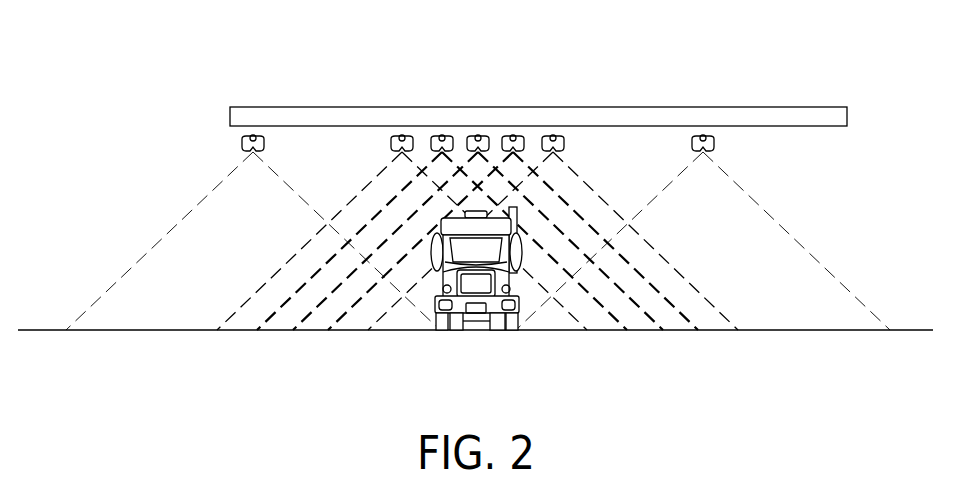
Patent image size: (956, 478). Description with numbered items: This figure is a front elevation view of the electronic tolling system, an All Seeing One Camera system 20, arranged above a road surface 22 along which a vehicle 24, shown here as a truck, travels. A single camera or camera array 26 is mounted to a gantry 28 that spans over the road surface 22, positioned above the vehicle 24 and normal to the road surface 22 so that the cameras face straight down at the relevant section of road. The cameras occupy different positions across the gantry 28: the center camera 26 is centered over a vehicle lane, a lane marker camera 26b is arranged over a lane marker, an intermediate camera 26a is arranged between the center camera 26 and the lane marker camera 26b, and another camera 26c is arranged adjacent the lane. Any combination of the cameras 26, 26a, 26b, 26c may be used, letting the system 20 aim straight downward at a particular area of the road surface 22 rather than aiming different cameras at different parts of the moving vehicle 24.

The All Seeing One Camera (ASOC) system 20 is at (362, 135).
The road surface 22 is at (183, 330).
The vehicle 24 is at (430, 308).
The camera 26 is at (478, 136).
The intermediate camera 26a is at (442, 136).
The lane marker camera 26b is at (402, 136).
The adjacent camera 26c is at (242, 145).
The gantry 28 is at (697, 117).